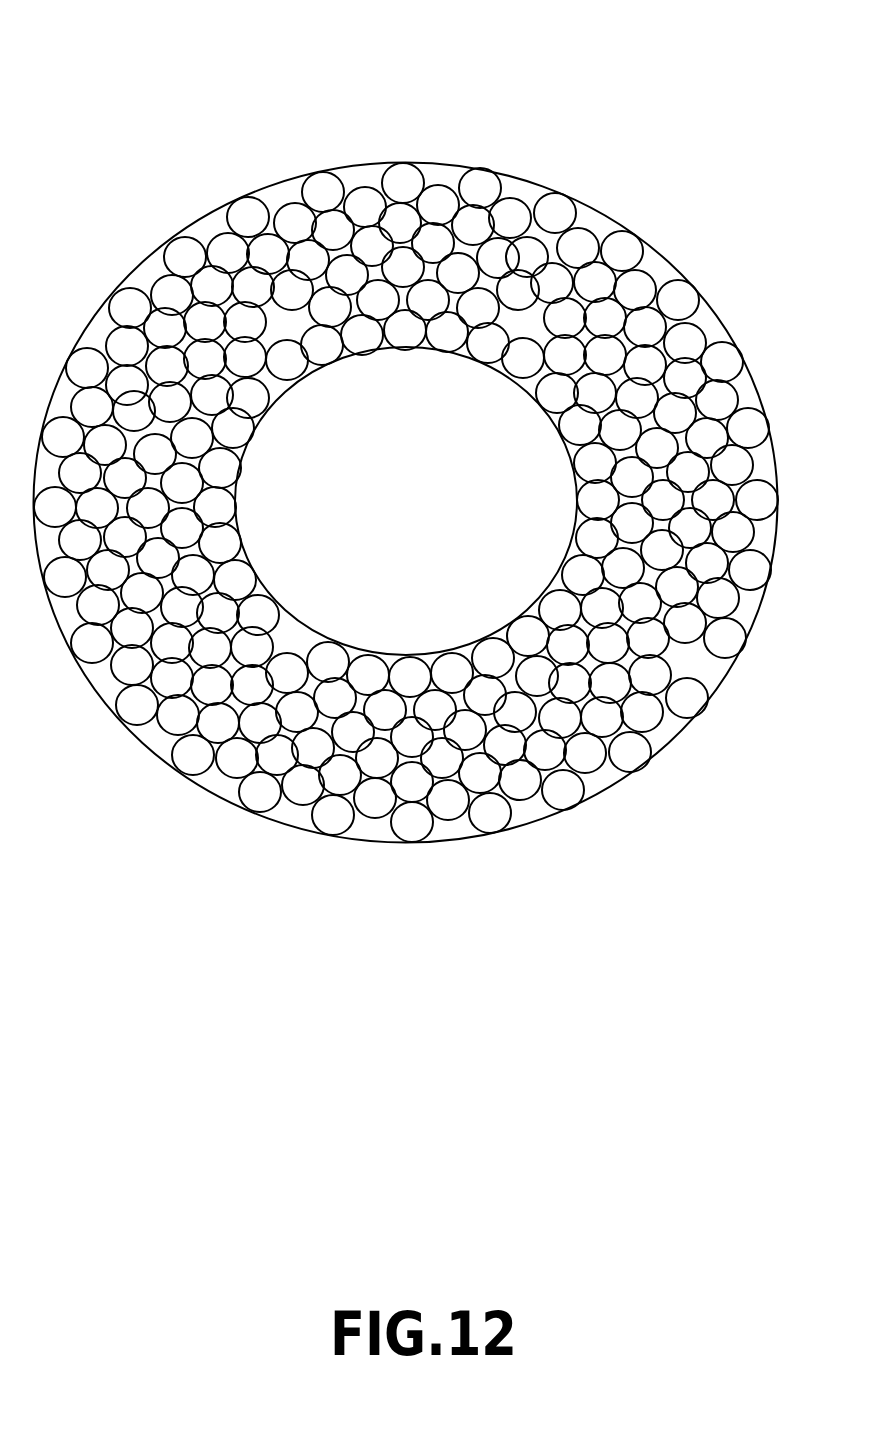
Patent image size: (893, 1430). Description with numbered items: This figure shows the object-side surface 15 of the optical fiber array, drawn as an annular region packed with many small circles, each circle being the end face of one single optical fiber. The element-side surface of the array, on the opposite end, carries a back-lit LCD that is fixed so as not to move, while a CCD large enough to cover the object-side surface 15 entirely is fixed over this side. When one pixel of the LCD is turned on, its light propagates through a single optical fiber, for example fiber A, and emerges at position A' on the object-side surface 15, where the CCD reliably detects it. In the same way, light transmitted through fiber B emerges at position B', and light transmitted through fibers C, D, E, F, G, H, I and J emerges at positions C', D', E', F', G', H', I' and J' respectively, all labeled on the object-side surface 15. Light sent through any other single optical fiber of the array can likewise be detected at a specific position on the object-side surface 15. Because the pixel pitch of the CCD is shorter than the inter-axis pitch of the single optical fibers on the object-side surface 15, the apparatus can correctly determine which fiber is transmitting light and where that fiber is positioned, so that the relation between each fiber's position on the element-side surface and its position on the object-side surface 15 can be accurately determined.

The object-side surface 15 is at (406, 423).
The position A' is at (248, 217).
The position B' is at (295, 223).
The position C' is at (323, 192).
The position D' is at (365, 207).
The position E' is at (403, 183).
The position F' is at (322, 345).
The position G' is at (362, 335).
The position H' is at (405, 330).
The position I' is at (447, 332).
The position J' is at (488, 343).